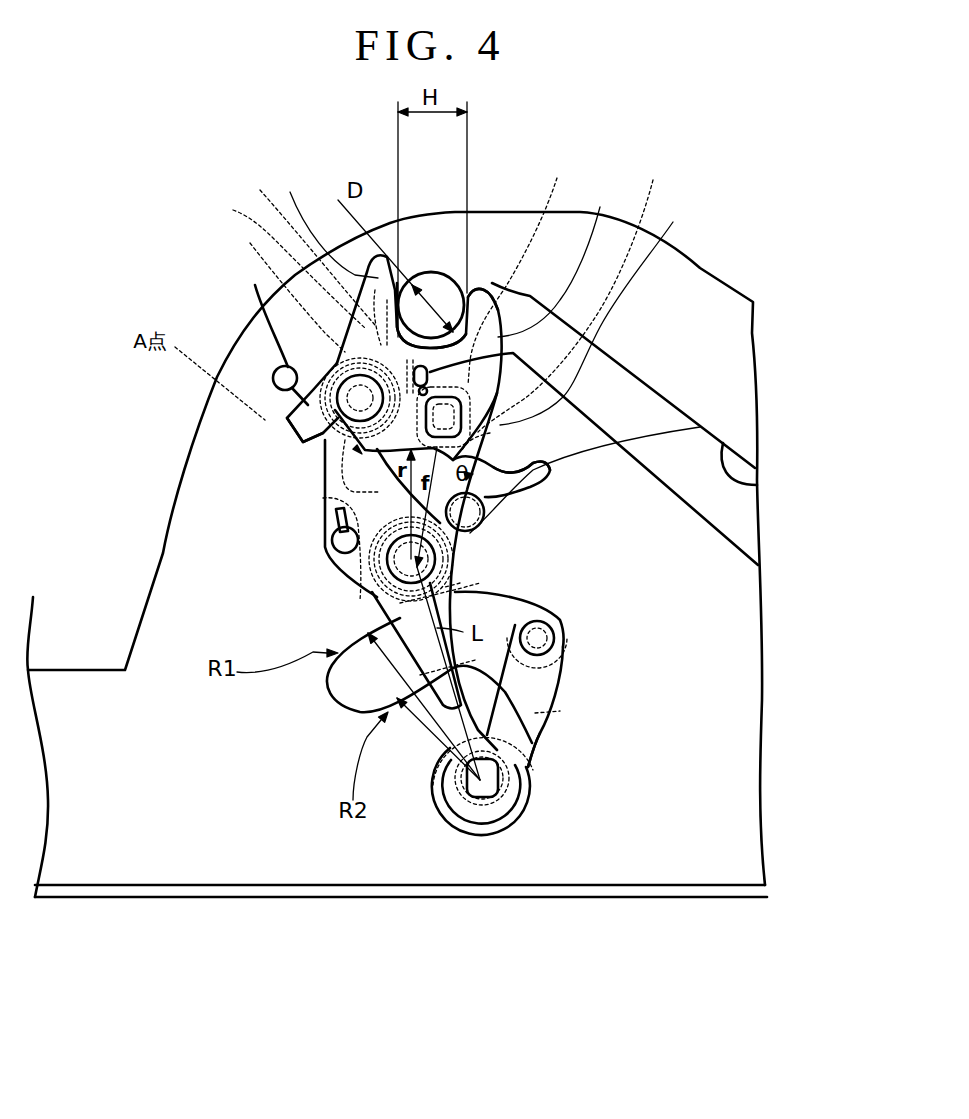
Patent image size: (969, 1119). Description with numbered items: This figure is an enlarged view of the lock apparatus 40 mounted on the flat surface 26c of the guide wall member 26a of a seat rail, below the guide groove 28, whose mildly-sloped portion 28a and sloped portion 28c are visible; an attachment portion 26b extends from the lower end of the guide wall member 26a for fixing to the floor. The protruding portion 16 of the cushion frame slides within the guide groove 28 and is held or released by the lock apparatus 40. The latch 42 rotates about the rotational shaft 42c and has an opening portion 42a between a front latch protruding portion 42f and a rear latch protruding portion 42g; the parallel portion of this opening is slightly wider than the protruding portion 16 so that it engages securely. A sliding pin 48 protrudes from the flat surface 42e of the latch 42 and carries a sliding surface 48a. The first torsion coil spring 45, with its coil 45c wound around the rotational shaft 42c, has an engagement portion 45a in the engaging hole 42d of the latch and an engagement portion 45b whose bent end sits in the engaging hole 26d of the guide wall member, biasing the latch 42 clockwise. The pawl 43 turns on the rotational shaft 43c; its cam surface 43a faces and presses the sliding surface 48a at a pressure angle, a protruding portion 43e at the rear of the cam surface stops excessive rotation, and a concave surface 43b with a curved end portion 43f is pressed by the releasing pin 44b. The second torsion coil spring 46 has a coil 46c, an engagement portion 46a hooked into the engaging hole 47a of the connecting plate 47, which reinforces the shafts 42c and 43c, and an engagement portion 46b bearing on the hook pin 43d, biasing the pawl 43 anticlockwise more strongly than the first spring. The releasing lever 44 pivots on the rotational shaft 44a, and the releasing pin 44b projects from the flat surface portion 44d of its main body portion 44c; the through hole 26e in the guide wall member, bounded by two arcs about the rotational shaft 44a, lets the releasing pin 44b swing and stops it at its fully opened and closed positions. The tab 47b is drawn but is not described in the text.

The protruding portion 16 is at (418, 305).
The guide wall member 26a is at (497, 257).
The attachment portion 26b is at (612, 892).
The flat surface 26c is at (717, 830).
The engaging hole 26d is at (275, 367).
The through hole 26e is at (497, 615).
The guide groove 28 is at (633, 385).
The mildly-sloped portion 28a is at (455, 280).
The sloped portion 28c is at (760, 484).
The lock apparatus 40 is at (690, 640).
The latch 42 is at (487, 325).
The opening portion 42a is at (438, 305).
The rotational shaft 42c is at (360, 398).
The engaging hole 42d is at (488, 348).
The flat surface 42e is at (276, 286).
The latch protruding portion 42f is at (327, 224).
The latch protruding portion 42g is at (565, 257).
The pawl 43 is at (507, 487).
The cam surface 43a is at (495, 452).
The concave surface 43b is at (477, 553).
The rotational shaft 43c is at (420, 557).
The hook pin 43d is at (467, 512).
The protruding portion 43e is at (700, 427).
The end portion 43f is at (527, 738).
The releasing lever 44 is at (540, 688).
The rotational shaft 44a is at (482, 797).
The releasing pin 44b is at (540, 638).
The main body portion 44c is at (532, 735).
The flat surface portion 44d is at (560, 711).
The first torsion coil spring 45 is at (282, 260).
The engagement portion 45a is at (470, 424).
The engagement portion 45b is at (253, 312).
The coil 45c is at (302, 244).
The second torsion coil spring 46 is at (372, 593).
The engagement portion 46a is at (323, 498).
The engagement portion 46b is at (467, 563).
The coil 46c is at (460, 583).
The connecting plate 47 is at (327, 476).
The engaging hole 47a is at (332, 540).
The link lever tab 47b is at (308, 445).
The sliding pin 48 is at (591, 290).
The sliding surface 48a is at (490, 433).